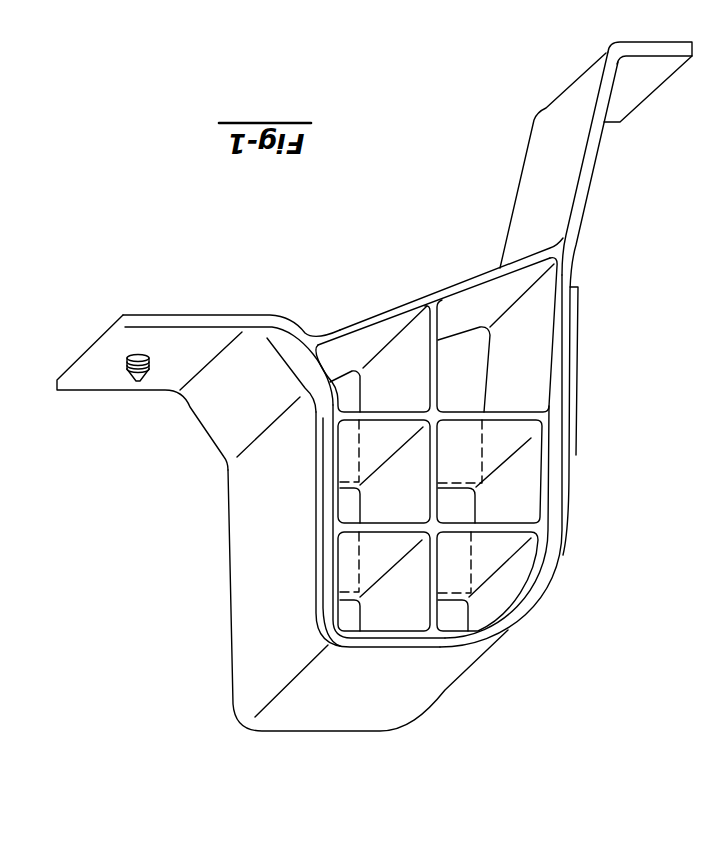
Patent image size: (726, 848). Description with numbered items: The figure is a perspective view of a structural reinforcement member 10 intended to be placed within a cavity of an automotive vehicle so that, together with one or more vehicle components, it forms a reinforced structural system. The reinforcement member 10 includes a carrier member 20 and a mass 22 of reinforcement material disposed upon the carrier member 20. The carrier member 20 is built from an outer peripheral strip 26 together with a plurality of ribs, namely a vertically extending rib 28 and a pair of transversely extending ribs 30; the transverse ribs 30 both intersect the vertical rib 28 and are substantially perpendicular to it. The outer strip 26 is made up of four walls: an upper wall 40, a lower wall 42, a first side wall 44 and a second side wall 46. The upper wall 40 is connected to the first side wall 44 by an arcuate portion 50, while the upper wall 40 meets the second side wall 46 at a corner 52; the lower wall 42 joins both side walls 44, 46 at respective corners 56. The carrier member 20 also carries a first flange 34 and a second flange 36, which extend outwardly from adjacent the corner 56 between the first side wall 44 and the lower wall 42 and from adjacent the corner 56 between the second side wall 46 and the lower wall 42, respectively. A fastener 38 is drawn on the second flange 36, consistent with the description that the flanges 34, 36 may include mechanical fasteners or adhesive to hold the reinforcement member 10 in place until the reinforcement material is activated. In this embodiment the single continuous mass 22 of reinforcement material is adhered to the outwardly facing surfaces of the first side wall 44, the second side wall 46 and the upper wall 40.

The structural reinforcement member 10 is at (161, 752).
The carrier member 20 is at (352, 322).
The mass of reinforcement material 22 is at (263, 559).
The outer peripheral strip 26 is at (537, 357).
The vertically extending rib 28 is at (413, 613).
The transversely extending rib 30 is at (463, 524).
The first flange 34 is at (580, 97).
The second flange 36 is at (175, 313).
The fastener 38 is at (137, 379).
The upper wall 40 is at (379, 622).
The lower wall 42 is at (453, 285).
The first side wall 44 is at (535, 478).
The second side wall 46 is at (333, 516).
The arcuate portion 50 is at (507, 592).
The corner 52 is at (343, 643).
The corner 56 is at (565, 253).